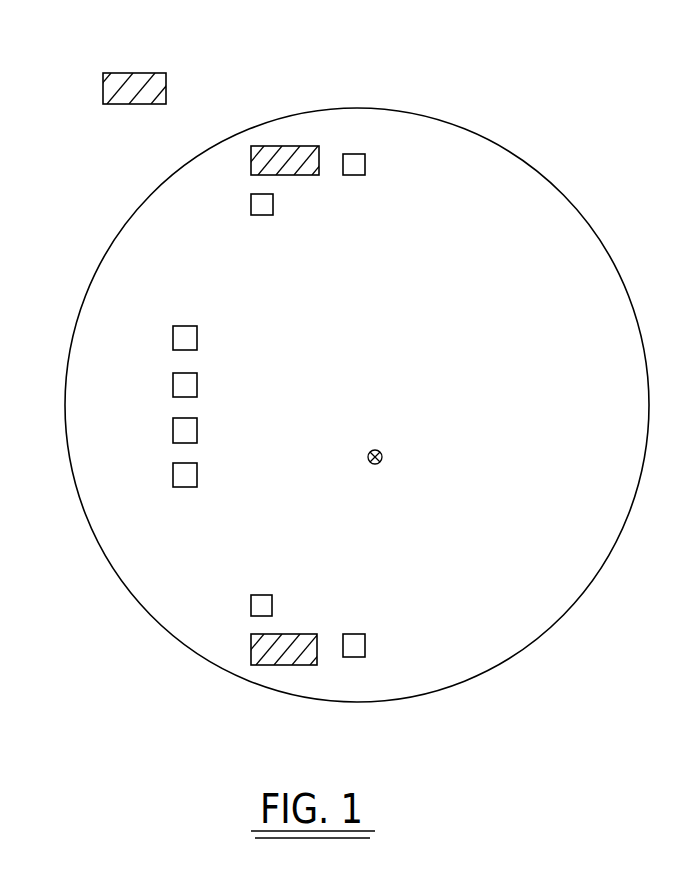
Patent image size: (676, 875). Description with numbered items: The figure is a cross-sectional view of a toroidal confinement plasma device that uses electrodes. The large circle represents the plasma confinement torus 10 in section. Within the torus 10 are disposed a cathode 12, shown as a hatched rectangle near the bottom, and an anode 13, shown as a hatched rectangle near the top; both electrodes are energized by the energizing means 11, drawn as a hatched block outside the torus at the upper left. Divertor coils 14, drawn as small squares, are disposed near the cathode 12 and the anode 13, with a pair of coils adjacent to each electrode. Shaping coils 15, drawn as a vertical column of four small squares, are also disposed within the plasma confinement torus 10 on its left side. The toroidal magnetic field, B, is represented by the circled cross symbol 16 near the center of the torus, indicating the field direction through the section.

The plasma confinement torus 10 is at (415, 112).
The energizing means 11 is at (127, 72).
The cathode 12 is at (250, 650).
The anode 13 is at (273, 145).
The divertor coils 14 is at (273, 205).
The shaping coils 15 is at (173, 430).
The toroidal magnetic field 16 is at (368, 460).